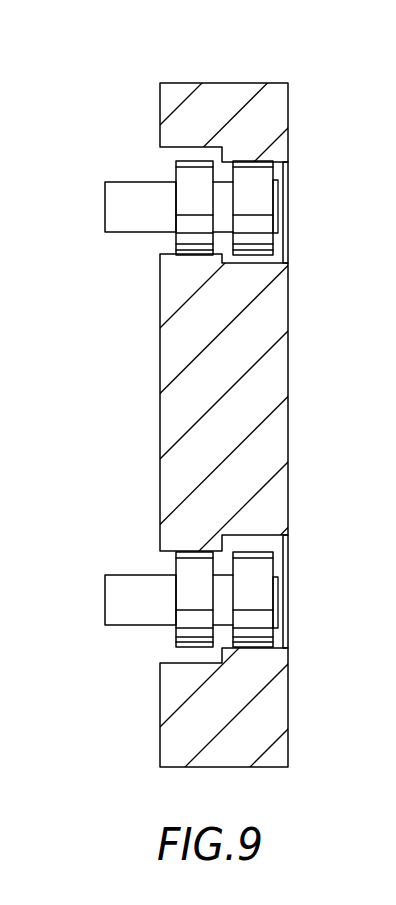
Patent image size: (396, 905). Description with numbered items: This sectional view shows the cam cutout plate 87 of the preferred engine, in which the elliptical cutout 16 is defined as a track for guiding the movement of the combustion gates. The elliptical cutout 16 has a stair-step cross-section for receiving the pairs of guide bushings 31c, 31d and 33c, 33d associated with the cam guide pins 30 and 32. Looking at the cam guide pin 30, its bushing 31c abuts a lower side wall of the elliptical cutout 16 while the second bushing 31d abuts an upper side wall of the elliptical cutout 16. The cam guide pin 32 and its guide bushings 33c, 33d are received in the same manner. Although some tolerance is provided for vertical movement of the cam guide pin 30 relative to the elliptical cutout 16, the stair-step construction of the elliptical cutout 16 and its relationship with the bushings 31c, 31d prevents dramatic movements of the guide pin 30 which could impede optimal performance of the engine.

The elliptical cam cutout 16 is at (272, 262).
The cam cutout plate 87 is at (218, 84).
The cam guide pin 30 is at (127, 182).
The bushing 31c is at (201, 165).
The bushing 31d is at (260, 175).
The cam guide pin 32 is at (125, 603).
The guide bushing 33c is at (183, 636).
The guide bushing 33d is at (255, 641).